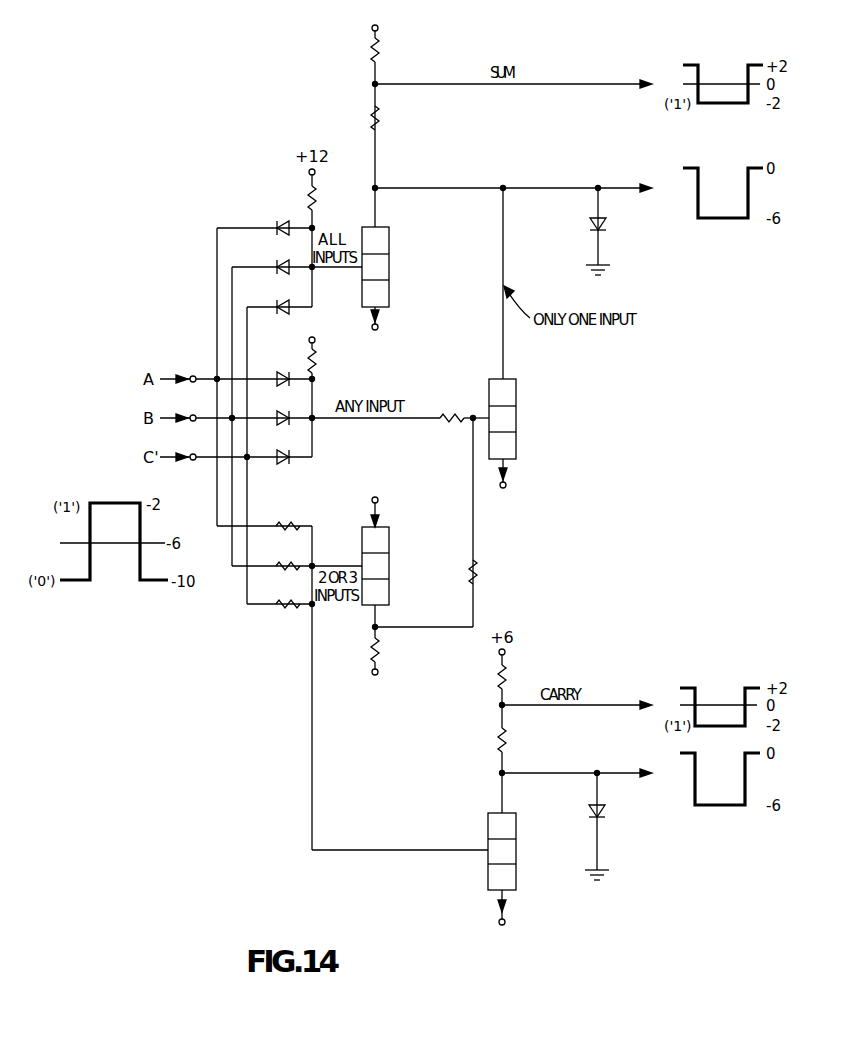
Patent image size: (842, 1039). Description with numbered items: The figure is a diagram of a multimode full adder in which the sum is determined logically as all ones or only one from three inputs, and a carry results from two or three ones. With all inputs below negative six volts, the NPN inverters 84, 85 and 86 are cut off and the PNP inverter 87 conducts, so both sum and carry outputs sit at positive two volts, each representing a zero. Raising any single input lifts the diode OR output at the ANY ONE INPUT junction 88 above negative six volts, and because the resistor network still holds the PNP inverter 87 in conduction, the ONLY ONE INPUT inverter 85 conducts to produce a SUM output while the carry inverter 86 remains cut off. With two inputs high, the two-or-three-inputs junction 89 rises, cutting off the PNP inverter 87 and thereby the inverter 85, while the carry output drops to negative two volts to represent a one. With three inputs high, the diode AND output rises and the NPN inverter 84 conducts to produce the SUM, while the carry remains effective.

The NPN inverter 84 is at (392, 258).
The NPN inverter 85 is at (522, 413).
The NPN inverter 86 is at (484, 842).
The PNP inverter 87 is at (392, 560).
The ANY ONE INPUT junction 88 is at (313, 420).
The 2 OR 3 INPUTS junction 89 is at (313, 564).